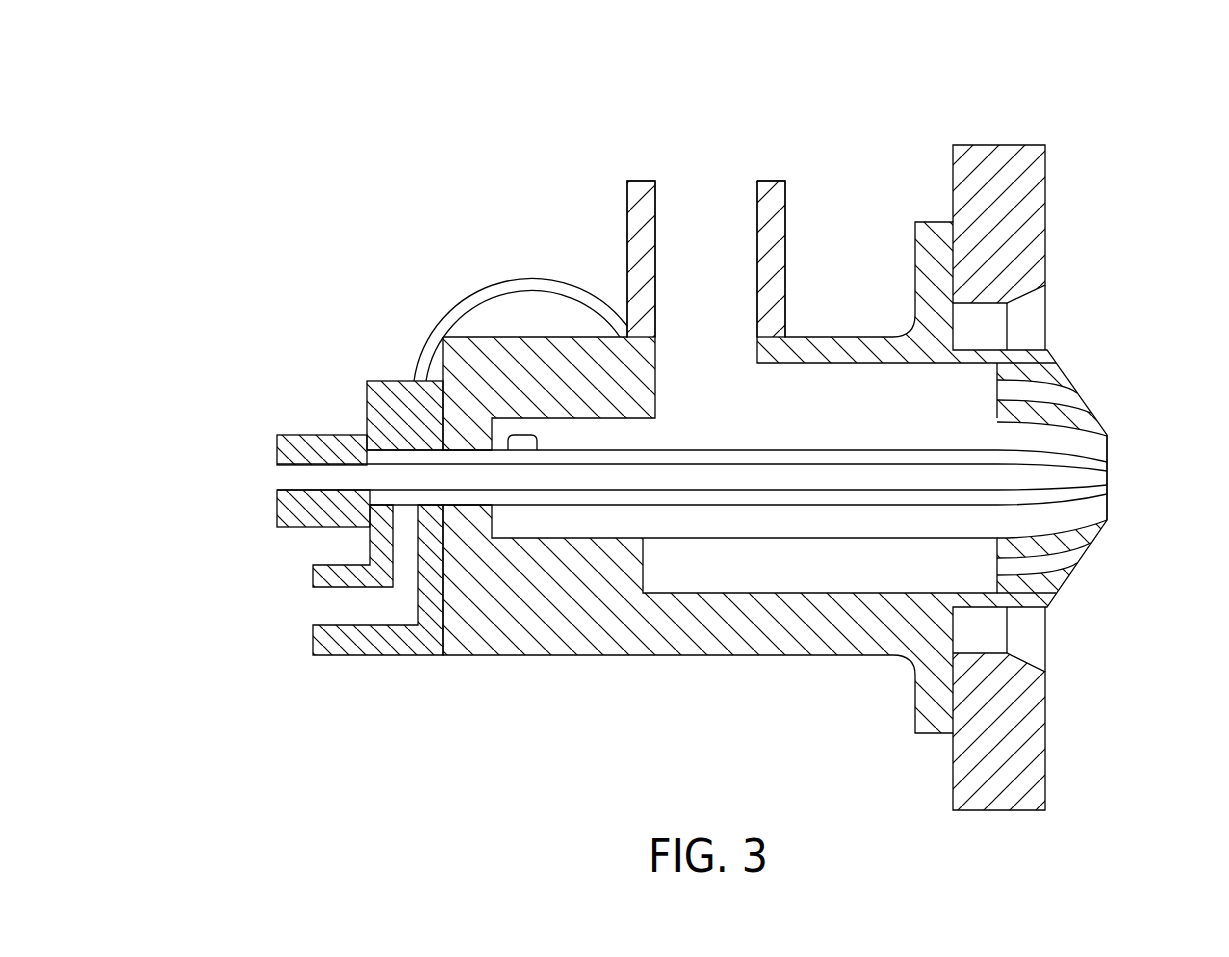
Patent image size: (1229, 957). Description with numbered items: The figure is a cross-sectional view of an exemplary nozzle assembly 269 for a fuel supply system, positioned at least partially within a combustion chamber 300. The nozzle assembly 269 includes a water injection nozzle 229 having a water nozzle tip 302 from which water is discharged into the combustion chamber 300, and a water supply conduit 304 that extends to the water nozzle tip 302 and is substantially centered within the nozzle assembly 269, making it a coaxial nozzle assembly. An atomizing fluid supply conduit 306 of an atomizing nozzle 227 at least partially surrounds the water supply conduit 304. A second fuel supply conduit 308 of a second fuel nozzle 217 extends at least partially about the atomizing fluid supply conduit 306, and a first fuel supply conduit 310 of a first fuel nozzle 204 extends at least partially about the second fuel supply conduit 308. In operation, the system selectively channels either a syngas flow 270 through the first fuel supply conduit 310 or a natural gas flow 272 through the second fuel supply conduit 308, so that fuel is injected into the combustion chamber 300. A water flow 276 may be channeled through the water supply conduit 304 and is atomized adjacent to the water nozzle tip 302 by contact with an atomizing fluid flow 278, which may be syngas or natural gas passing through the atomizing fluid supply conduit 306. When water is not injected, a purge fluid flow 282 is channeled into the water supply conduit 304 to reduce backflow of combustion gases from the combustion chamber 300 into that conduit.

The first fuel nozzle 204 is at (786, 292).
The second fuel nozzle 217 is at (673, 656).
The atomizing nozzle 227 is at (340, 655).
The water injection nozzle 229 is at (287, 527).
The nozzle assembly 269 is at (1052, 98).
The syngas flow 270 is at (707, 192).
The natural gas flow 272 is at (528, 248).
The water flow 276 is at (200, 455).
The purge fluid flow 282 is at (240, 480).
The atomizing fluid flow 278 is at (285, 603).
The combustion chamber 300 is at (1113, 322).
The water nozzle tip 302 is at (1130, 509).
The water supply conduit 304 is at (683, 483).
The atomizing fluid supply conduit 306 is at (893, 502).
The second fuel supply conduit 308 is at (736, 445).
The first fuel supply conduit 310 is at (736, 396).